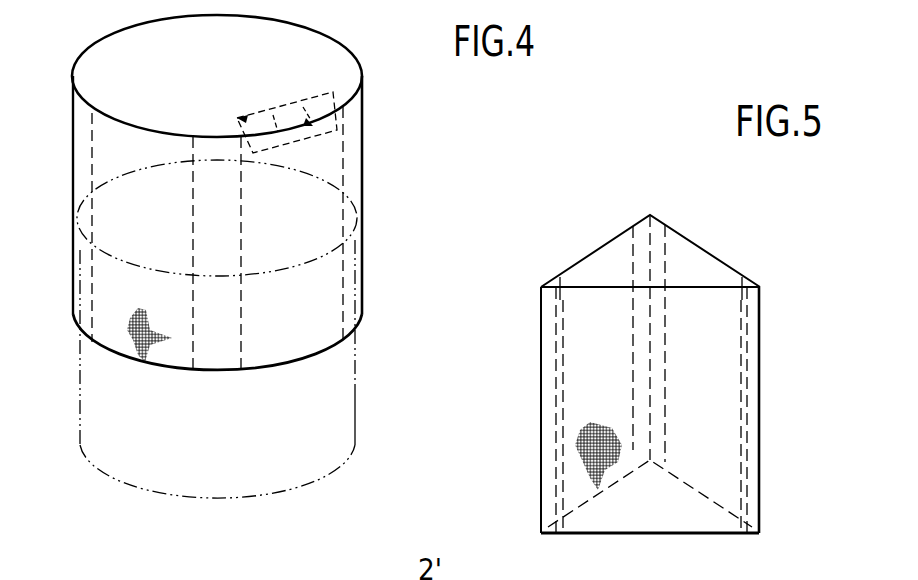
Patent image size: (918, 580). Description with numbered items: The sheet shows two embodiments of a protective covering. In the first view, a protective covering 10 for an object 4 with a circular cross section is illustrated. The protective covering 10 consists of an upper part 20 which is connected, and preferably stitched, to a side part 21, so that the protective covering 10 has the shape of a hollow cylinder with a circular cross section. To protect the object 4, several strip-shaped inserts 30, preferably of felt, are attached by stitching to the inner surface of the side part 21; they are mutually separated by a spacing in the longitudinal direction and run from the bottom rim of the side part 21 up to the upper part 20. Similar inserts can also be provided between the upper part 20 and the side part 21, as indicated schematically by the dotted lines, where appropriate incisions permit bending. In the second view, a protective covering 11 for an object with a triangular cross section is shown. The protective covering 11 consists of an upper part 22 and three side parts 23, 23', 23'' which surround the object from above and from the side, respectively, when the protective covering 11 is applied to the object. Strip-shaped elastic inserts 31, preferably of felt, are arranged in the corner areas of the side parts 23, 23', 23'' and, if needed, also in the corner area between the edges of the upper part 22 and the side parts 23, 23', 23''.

In FIG. 4, the protective covering 10 is at (354, 31).
In FIG. 4, the upper part 20 is at (338, 75).
In FIG. 4, the strip-shaped inserts 30 is at (82, 155).
In FIG. 4, the side part 21 is at (316, 342).
In FIG. 4, the object 4 is at (198, 506).
In FIG. 5, the protective covering 11 is at (716, 219).
In FIG. 5, the upper part 22 is at (712, 272).
In FIG. 5, the side part 23 is at (771, 424).
In FIG. 5, the side part 23' is at (555, 224).
In FIG. 5, the side part 23'' is at (679, 304).
In FIG. 5, the strip-shaped elastic inserts 31 is at (752, 330).